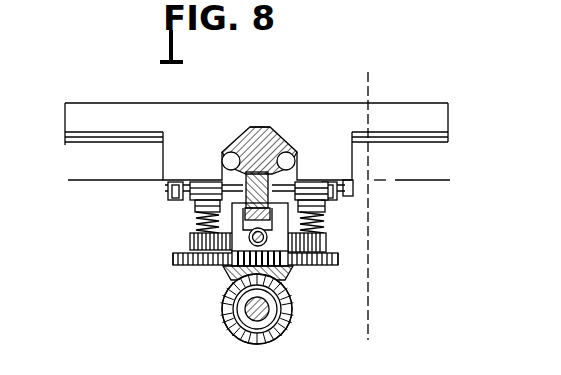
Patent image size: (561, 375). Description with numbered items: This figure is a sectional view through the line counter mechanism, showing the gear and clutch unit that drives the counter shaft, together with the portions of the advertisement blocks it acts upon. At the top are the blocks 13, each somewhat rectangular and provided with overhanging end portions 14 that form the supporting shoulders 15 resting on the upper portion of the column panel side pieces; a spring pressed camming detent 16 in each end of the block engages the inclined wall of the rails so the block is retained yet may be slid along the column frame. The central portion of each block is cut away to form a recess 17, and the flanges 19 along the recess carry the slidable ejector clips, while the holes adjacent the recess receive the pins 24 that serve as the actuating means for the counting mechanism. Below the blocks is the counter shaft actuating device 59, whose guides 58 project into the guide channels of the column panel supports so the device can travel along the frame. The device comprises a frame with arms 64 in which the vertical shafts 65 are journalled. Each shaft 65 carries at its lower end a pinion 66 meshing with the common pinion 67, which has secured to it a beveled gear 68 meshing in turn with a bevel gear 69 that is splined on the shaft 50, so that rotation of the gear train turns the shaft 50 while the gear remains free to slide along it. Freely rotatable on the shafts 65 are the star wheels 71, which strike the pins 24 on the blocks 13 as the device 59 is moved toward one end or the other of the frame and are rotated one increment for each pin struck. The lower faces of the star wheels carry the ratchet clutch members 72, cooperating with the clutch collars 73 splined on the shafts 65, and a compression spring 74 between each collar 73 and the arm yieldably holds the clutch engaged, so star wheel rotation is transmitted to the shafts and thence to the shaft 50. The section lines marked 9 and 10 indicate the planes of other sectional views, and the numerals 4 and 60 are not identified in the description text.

The wedge cam 4 is at (262, 126).
The section line 9- 9 is at (68, 158).
The section line 10- 10 is at (370, 74).
The block 13 is at (112, 117).
The overhanging end portion 14 is at (283, 103).
The supporting shoulder 15 is at (251, 126).
The spring pressed camming detent 16 is at (234, 151).
The recess 17 is at (163, 162).
The flange 19 is at (65, 140).
The pin 24 is at (176, 182).
The shaft 50 is at (268, 311).
The guide 58 is at (290, 209).
The counter shaft actuating device 59 is at (300, 221).
The shaft 60 is at (248, 238).
The arm 64 is at (180, 257).
The vertical shaft 65 is at (195, 224).
The pinion 66 is at (190, 264).
The common pinion 67 is at (289, 268).
The beveled gear 68 is at (221, 282).
The bevel gear 69 is at (243, 335).
The star wheel 71 is at (200, 182).
The ratchet clutch member 72 is at (190, 196).
The clutch collar 73 is at (190, 202).
The compression spring 74 is at (190, 212).